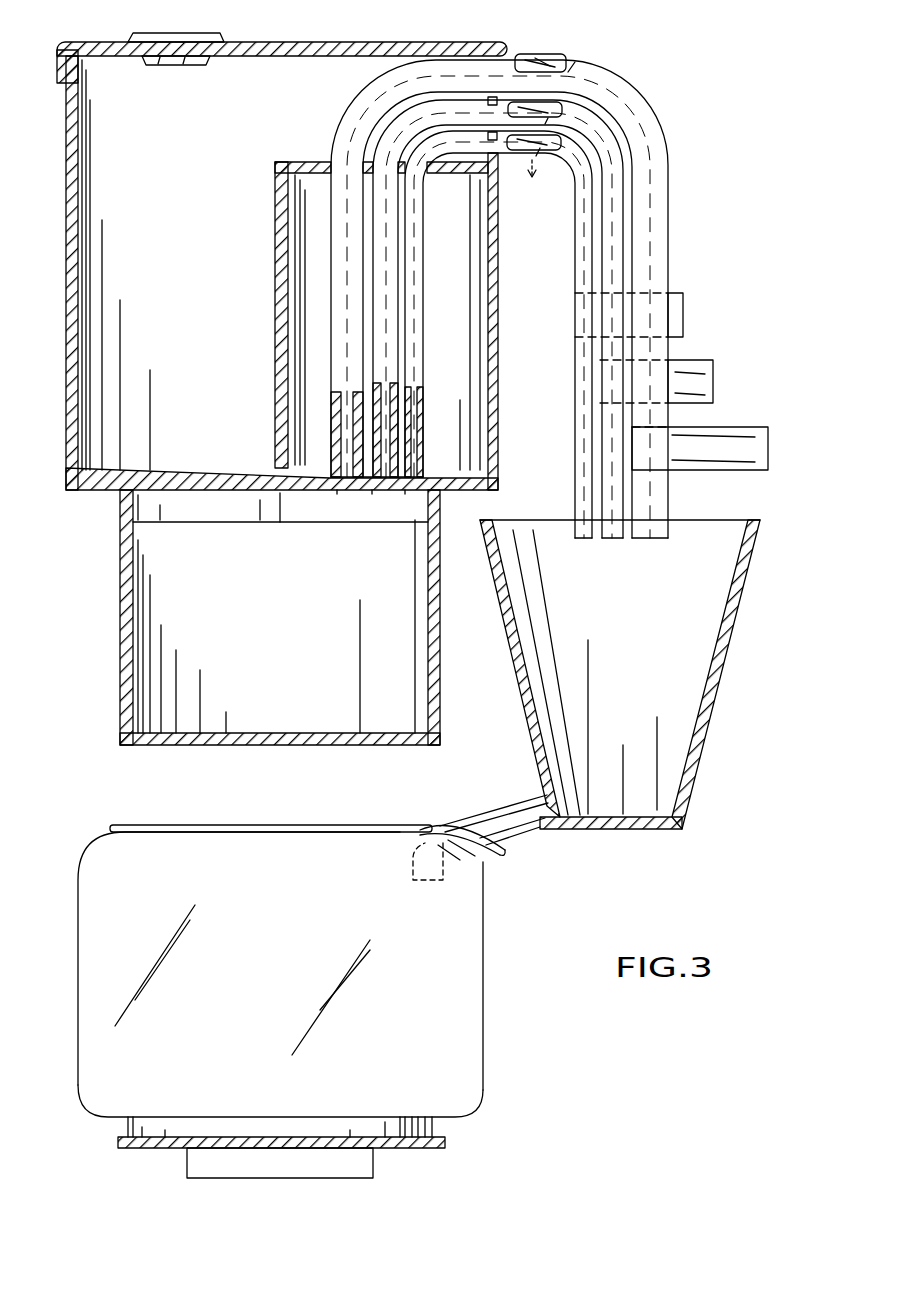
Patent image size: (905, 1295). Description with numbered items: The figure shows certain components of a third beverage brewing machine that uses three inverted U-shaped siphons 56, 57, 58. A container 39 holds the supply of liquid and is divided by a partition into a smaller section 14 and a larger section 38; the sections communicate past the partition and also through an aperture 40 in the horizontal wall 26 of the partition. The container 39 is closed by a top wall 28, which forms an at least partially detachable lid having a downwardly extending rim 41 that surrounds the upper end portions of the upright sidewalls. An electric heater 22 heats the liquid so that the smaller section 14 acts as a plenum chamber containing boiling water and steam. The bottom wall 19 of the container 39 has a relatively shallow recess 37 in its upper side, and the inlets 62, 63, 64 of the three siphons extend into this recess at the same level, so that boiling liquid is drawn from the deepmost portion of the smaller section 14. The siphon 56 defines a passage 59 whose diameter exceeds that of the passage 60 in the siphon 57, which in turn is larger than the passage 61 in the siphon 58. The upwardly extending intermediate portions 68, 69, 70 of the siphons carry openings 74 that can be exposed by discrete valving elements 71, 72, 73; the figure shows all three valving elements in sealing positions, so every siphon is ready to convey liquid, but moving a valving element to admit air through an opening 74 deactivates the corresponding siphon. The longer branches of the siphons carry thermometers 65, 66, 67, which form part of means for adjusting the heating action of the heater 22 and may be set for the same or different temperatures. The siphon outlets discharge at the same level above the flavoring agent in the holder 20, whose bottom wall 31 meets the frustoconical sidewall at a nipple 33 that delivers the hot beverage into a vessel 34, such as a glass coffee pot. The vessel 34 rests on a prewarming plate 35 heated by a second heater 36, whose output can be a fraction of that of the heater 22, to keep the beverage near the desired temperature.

The smaller section 14 is at (300, 263).
The bottom wall 19 is at (213, 470).
The holder 20 is at (718, 705).
The electric heater 22 is at (293, 526).
The horizontal wall 26 is at (455, 175).
The top wall 28 is at (302, 42).
The bottom wall 31 is at (617, 830).
The nipple 33 is at (530, 838).
The vessel 34 is at (490, 1020).
The prewarming plate 35 is at (415, 1150).
The second heater 36 is at (368, 1185).
The recess 37 is at (430, 476).
The larger section 38 is at (188, 353).
The container 39 is at (66, 377).
The aperture 40 is at (312, 162).
The rim 41 is at (57, 68).
The siphon 56 is at (668, 135).
The siphon 57 is at (622, 212).
The siphon 58 is at (593, 270).
The passage 59 is at (352, 392).
The passage 60 is at (387, 397).
The passage 61 is at (422, 420).
The inlet 62 is at (338, 491).
The inlet 63 is at (373, 491).
The inlet 64 is at (407, 491).
The thermometer 65 is at (735, 448).
The thermometer 66 is at (704, 370).
The thermometer 67 is at (683, 302).
The intermediate portion 68 is at (575, 60).
The intermediate portion 69 is at (548, 122).
The intermediate portion 70 is at (555, 150).
The valving element 71 is at (520, 54).
The valving element 72 is at (553, 104).
The valving element 73 is at (548, 138).
The opening 74 is at (542, 182).